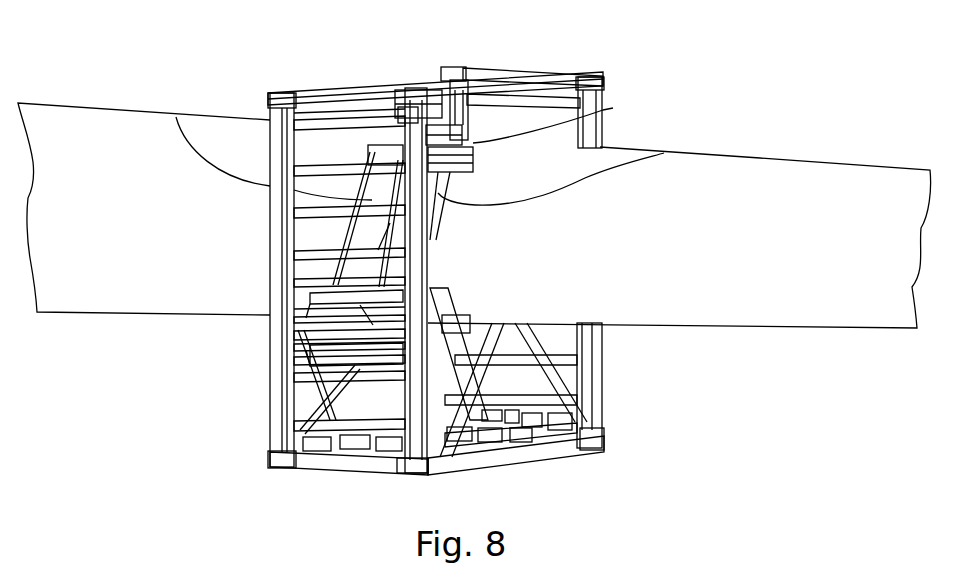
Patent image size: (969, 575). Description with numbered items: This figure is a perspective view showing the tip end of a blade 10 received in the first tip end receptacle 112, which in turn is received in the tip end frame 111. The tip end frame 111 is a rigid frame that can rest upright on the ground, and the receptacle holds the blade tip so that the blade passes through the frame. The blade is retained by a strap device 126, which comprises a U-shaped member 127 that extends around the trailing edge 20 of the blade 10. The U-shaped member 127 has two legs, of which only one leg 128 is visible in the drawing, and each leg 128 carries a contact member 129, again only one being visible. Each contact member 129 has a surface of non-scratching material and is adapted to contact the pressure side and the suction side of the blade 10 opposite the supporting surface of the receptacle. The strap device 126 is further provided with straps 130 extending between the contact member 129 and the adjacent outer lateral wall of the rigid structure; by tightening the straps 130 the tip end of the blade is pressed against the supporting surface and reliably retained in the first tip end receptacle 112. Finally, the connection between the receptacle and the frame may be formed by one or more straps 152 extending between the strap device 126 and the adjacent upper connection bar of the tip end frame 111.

The blade 10 is at (765, 148).
The trailing edge 20 is at (688, 152).
The tip end frame 111 is at (620, 392).
The first tip end receptacle 112 is at (270, 330).
The strap device 126 is at (474, 127).
The U-shaped member 127 is at (425, 84).
The leg 128 is at (561, 119).
The contact member 129 is at (470, 169).
The straps 130 is at (176, 117).
The straps 152 is at (270, 285).